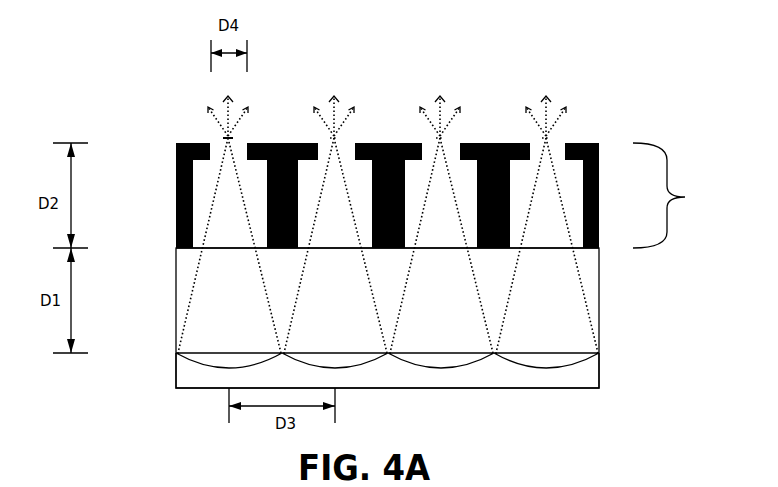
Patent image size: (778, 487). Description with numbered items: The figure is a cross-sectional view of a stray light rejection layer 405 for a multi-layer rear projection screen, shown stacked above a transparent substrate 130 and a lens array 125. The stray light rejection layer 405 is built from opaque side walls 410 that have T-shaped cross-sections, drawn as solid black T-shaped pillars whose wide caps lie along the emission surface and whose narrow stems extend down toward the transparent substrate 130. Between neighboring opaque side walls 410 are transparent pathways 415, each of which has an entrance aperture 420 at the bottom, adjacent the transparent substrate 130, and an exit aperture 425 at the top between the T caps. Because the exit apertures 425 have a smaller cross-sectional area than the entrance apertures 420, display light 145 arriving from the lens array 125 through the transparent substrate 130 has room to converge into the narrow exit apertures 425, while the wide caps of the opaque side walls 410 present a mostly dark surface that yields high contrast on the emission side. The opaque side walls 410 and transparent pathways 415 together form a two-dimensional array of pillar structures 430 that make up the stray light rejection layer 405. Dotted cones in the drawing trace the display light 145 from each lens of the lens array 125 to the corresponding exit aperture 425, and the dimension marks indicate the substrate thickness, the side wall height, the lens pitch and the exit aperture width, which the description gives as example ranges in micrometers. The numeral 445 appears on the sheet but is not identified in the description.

The lens array 125 is at (177, 370).
The transparent substrate 130 is at (177, 302).
The display light 145 is at (233, 113).
The stray light rejection layer 405 is at (681, 195).
The opaque side walls 410 is at (203, 248).
The transparent pathways 415 is at (402, 143).
The entrance aperture 420 is at (560, 248).
The exit aperture 425 is at (221, 142).
The pillar structures 430 is at (432, 72).
The pixel pitch 445 is at (552, 479).